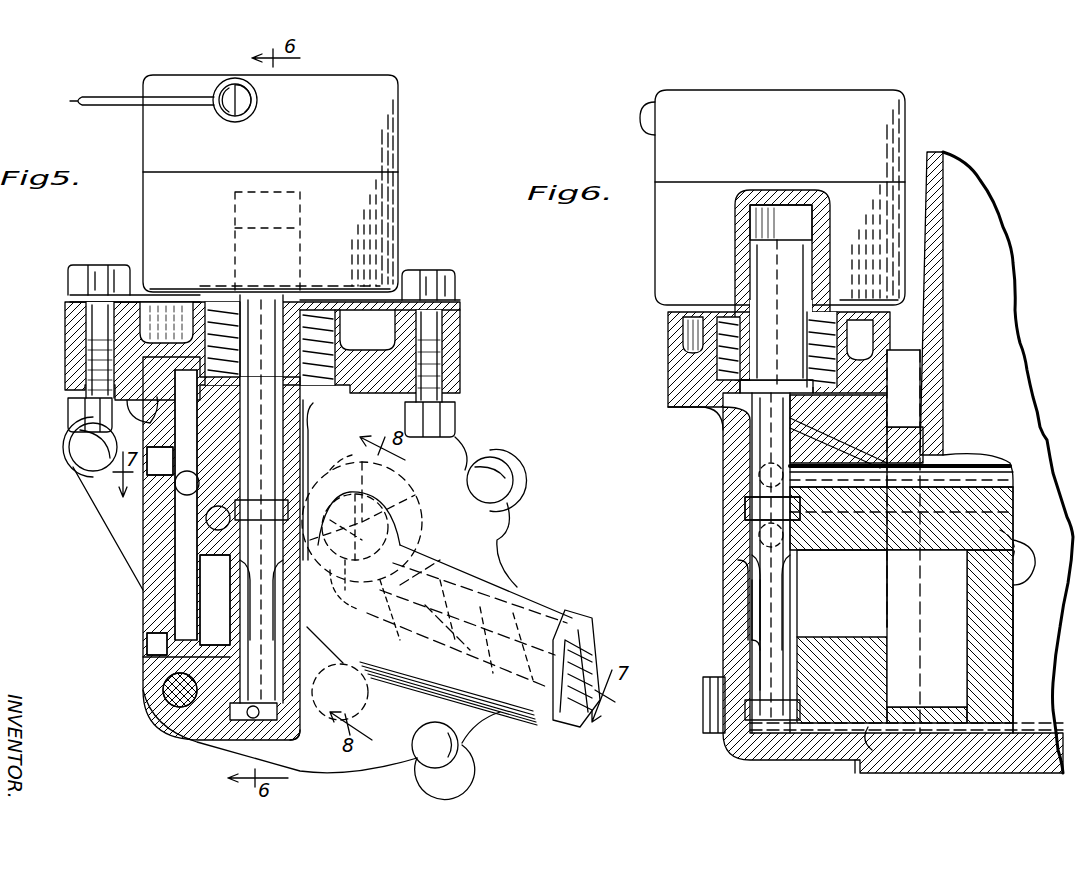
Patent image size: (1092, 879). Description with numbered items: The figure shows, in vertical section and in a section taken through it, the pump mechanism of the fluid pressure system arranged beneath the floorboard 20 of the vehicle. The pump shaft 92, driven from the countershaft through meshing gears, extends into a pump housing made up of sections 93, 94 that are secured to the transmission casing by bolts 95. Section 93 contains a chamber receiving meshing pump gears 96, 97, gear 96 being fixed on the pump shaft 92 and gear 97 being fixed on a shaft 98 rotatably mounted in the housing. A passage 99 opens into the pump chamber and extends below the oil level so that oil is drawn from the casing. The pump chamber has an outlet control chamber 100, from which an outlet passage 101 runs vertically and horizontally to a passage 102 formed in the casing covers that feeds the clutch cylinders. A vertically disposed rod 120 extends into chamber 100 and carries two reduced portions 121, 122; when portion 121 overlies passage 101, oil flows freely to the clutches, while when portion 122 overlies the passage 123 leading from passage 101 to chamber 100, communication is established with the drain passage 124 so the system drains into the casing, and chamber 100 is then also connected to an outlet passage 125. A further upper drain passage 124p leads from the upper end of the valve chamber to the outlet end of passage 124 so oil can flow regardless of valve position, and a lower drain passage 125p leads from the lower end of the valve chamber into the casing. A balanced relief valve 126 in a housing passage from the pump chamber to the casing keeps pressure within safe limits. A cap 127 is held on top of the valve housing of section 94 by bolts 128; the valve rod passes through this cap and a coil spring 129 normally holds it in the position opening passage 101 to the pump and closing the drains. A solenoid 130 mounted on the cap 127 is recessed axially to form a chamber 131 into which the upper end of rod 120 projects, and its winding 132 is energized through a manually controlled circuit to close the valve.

In FIG. 6, the floorboard 20 is at (938, 292).
In FIG. 5, the pump shaft 92 is at (368, 692).
In FIG. 6, the pump housing section 93 is at (1013, 660).
In FIG. 5, the pump housing section 94 is at (505, 548).
In FIG. 6, the pump housing section 94 is at (732, 635).
In FIG. 5, the bolts 95 is at (90, 460).
In FIG. 6, the bolts 95 is at (705, 712).
In FIG. 5, the pump gear 96 is at (298, 732).
In FIG. 5, the pump gear 97 is at (428, 520).
In FIG. 5, the shaft 98 is at (430, 543).
In FIG. 5, the passage 99 is at (466, 586).
In FIG. 5, the outlet control chamber 100 is at (255, 622).
In FIG. 6, the outlet control chamber 100 is at (738, 565).
In FIG. 5, the outlet passage 101 is at (230, 594).
In FIG. 6, the outlet passage 101 is at (752, 648).
In FIG. 6, the passage 102 is at (1025, 550).
In FIG. 5, the rod 120 is at (300, 432).
In FIG. 6, the rod 120 is at (758, 445).
In FIG. 5, the reduced portion 121 is at (245, 572).
In FIG. 6, the reduced portion 121 is at (757, 592).
In FIG. 5, the reduced valve portion 122 is at (245, 498).
In FIG. 6, the reduced valve portion 122 is at (752, 505).
In FIG. 5, the passage 123 is at (175, 447).
In FIG. 6, the passage 123 is at (760, 468).
In FIG. 5, the drain passage 124 is at (352, 455).
In FIG. 6, the drain passage 124 is at (920, 462).
In FIG. 6, the drain passage 124p is at (850, 440).
In FIG. 5, the outlet passage 125 is at (215, 520).
In FIG. 6, the outlet passage 125 is at (758, 530).
In FIG. 5, the drain passage 125p is at (250, 716).
In FIG. 6, the drain passage 125p is at (868, 755).
In FIG. 5, the balanced relief valve 126 is at (488, 705).
In FIG. 5, the cap 127 is at (455, 336).
In FIG. 6, the cap 127 is at (685, 347).
In FIG. 5, the bolts 128 is at (88, 340).
In FIG. 5, the coil spring 129 is at (222, 350).
In FIG. 6, the coil spring 129 is at (740, 300).
In FIG. 5, the solenoid 130 is at (375, 221).
In FIG. 6, the solenoid 130 is at (660, 258).
In FIG. 5, the chamber 131 is at (238, 205).
In FIG. 6, the chamber 131 is at (810, 230).
In FIG. 6, the solenoid winding 132 is at (736, 229).